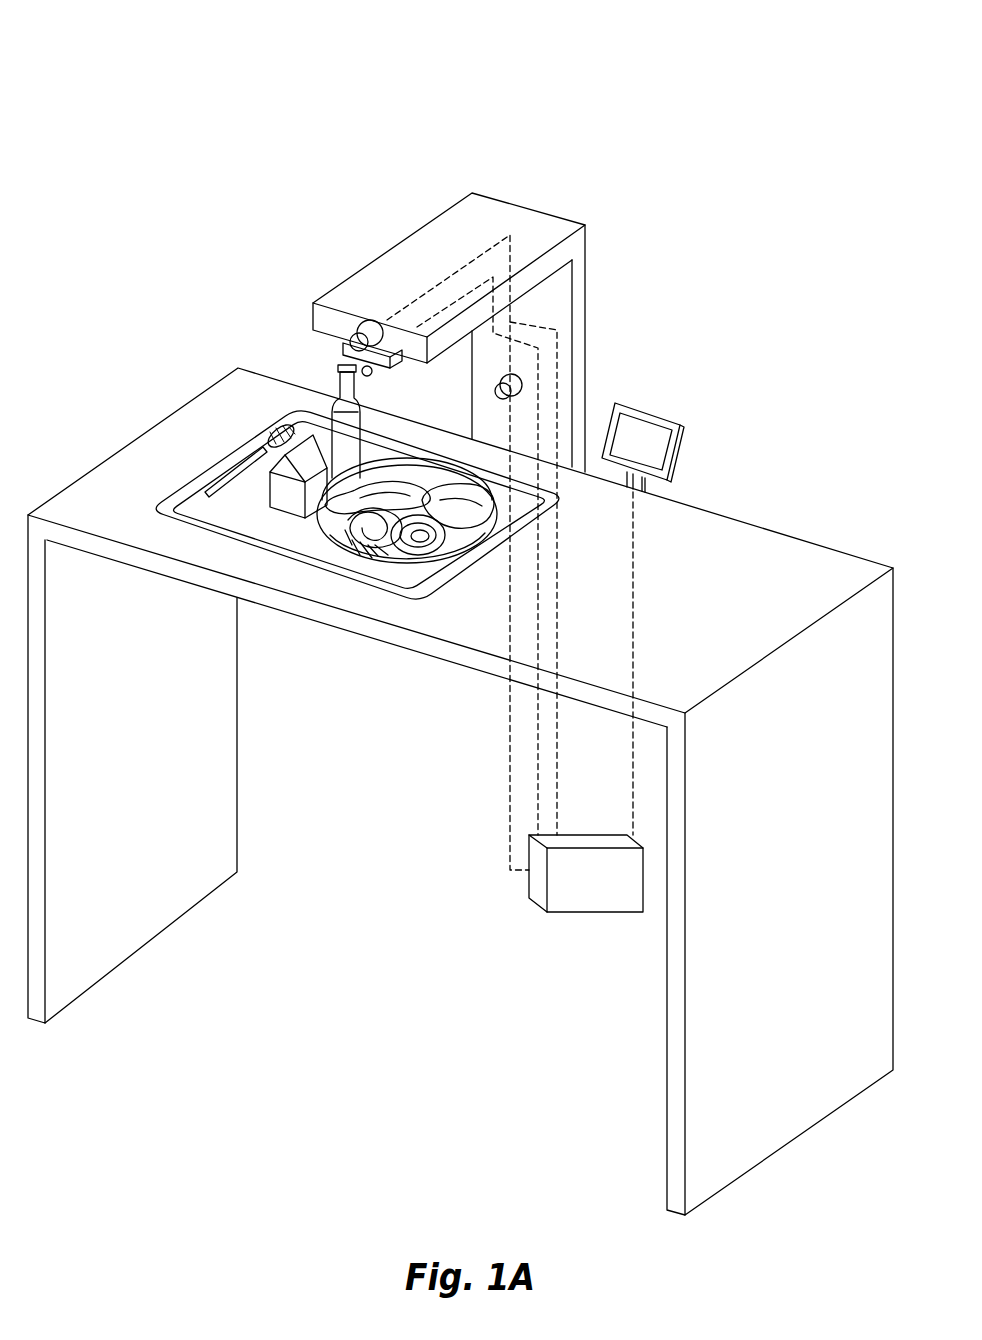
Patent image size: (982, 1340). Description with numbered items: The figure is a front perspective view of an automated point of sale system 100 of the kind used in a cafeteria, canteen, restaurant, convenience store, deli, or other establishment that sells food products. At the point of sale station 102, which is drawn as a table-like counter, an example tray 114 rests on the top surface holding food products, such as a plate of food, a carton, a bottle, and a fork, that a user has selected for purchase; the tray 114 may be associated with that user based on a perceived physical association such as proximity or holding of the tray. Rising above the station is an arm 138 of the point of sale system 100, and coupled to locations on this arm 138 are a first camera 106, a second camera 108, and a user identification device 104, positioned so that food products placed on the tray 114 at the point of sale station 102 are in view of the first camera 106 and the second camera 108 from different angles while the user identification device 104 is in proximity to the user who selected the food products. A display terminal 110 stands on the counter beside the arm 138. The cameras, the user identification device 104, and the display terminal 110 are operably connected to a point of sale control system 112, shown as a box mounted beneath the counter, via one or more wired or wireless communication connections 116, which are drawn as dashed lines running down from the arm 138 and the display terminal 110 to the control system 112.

The automated point of sale system 100 is at (175, 84).
The point of sale station 102 is at (175, 441).
The user identification device 104 is at (357, 320).
The first camera 106 is at (336, 366).
The second camera 108 is at (497, 388).
The display terminal 110 is at (645, 428).
The point of sale control system 112 is at (541, 889).
The tray 114 is at (272, 528).
The communication connections 116 is at (478, 727).
The arm 138 is at (418, 243).